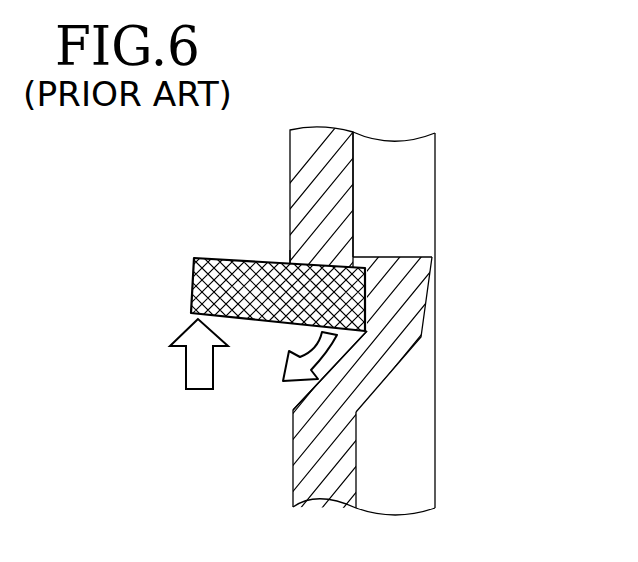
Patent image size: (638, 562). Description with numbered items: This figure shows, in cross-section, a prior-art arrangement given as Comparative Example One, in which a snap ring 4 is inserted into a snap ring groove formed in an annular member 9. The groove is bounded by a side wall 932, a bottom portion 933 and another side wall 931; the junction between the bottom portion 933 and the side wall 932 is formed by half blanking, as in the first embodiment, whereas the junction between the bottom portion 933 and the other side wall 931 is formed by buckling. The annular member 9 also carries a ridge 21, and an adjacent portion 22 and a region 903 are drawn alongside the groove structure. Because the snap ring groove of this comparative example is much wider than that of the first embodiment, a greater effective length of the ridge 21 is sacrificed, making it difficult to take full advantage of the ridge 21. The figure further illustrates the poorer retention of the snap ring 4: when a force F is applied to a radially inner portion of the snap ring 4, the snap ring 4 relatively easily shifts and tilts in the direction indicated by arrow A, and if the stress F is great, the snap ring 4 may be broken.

The annular member 9 is at (480, 137).
The ridge 21 is at (313, 165).
The second member 22 is at (435, 217).
The snap ring 4 is at (191, 288).
The side wall 931 is at (293, 410).
The side wall 932 is at (270, 268).
The bottom portion 933 is at (368, 321).
The groove 903 is at (233, 393).
The force F is at (208, 372).
The arrow A is at (302, 356).